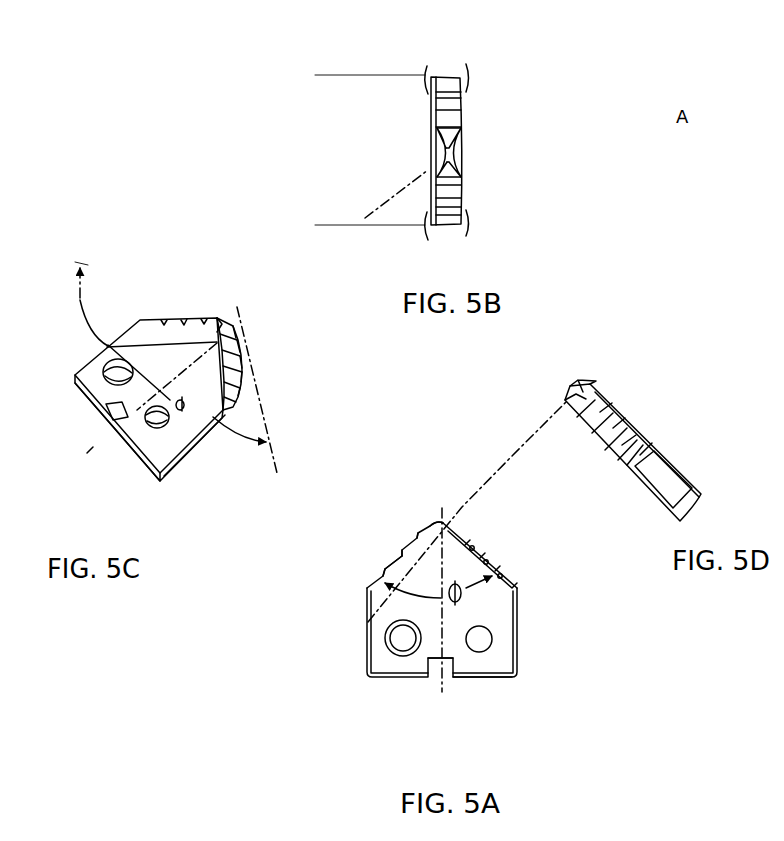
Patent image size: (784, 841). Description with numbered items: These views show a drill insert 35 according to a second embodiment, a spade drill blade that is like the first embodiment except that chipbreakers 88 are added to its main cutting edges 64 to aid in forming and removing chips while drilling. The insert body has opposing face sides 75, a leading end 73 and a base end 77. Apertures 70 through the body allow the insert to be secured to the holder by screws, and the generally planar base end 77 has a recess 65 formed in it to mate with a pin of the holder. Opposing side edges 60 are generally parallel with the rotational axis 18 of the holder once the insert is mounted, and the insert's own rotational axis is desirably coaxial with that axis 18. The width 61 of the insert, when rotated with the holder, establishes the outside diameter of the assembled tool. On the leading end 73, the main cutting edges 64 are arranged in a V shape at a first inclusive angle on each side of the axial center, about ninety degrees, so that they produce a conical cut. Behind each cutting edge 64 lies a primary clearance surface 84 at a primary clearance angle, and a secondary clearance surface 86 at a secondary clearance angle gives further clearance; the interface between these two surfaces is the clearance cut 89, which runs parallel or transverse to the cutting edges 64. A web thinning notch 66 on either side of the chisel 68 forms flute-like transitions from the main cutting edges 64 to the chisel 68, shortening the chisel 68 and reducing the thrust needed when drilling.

In FIG. 5A, the rotational axis 18 is at (440, 522).
In FIG. 5B, the drill insert 35 is at (505, 87).
In FIG. 5C, the drill insert 35 is at (172, 252).
In FIG. 5D, the drill insert 35 is at (733, 385).
In FIG. 5A, the drill insert 35 is at (338, 618).
In FIG. 5B, the opposing side edges 60 is at (446, 74).
In FIG. 5C, the opposing side edges 60 is at (182, 453).
In FIG. 5D, the opposing side edges 60 is at (680, 483).
In FIG. 5A, the opposing side edges 60 is at (442, 632).
In FIG. 5B, the width 61 is at (325, 76).
In FIG. 5B, the main cutting edges 64 is at (432, 101).
In FIG. 5C, the main cutting edges 64 is at (148, 315).
In FIG. 5D, the main cutting edges 64 is at (623, 420).
In FIG. 5A, the main cutting edges 64 is at (378, 578).
In FIG. 5C, the recess 65 is at (106, 418).
In FIG. 5A, the recess 65 is at (435, 680).
In FIG. 5C, the web thinning notch 66 is at (232, 318).
In FIG. 5D, the web thinning notch 66 is at (565, 399).
In FIG. 5A, the web thinning notch 66 is at (436, 525).
In FIG. 5D, the chisel 68 is at (571, 392).
In FIG. 5C, the apertures 70 is at (108, 375).
In FIG. 5A, the apertures 70 is at (397, 643).
In FIG. 5A, the leading end 73 is at (468, 531).
In FIG. 5C, the opposing face sides 75 is at (197, 373).
In FIG. 5A, the base end 77 is at (463, 681).
In FIG. 5B, the primary clearance surface 84 is at (450, 173).
In FIG. 5C, the primary clearance surface 84 is at (230, 389).
In FIG. 5D, the primary clearance surface 84 is at (623, 447).
In FIG. 5B, the secondary clearance surface 86 is at (431, 170).
In FIG. 5C, the secondary clearance surface 86 is at (222, 350).
In FIG. 5D, the secondary clearance surface 86 is at (582, 420).
In FIG. 5B, the chipbreakers 88 is at (432, 113).
In FIG. 5C, the chipbreakers 88 is at (180, 317).
In FIG. 5D, the chipbreakers 88 is at (640, 447).
In FIG. 5A, the chipbreakers 88 is at (402, 556).
In FIG. 5B, the clearance cut 89 is at (458, 120).
In FIG. 5D, the clearance cut 89 is at (580, 417).